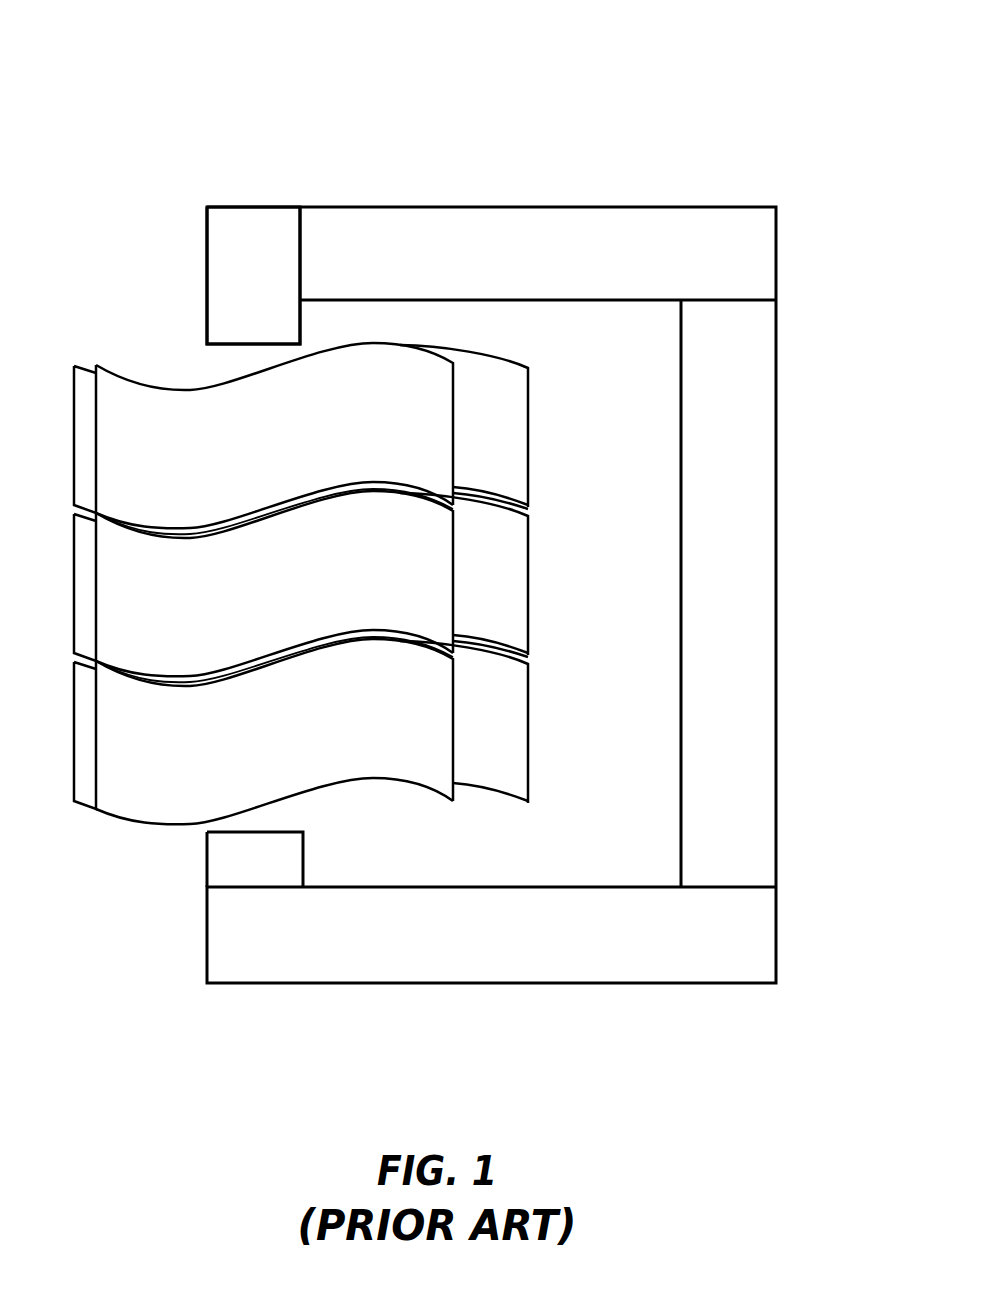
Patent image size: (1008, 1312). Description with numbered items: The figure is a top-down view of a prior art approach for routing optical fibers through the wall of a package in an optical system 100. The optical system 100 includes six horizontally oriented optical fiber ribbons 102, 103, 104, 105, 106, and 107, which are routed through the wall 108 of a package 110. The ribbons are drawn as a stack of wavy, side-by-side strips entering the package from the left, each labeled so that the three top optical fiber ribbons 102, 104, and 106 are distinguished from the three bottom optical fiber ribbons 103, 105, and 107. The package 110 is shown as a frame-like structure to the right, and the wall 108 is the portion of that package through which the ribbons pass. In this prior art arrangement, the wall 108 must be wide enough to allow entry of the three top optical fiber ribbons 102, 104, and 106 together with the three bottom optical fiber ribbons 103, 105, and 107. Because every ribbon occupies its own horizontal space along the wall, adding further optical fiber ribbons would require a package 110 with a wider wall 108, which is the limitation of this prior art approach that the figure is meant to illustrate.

The optical system 100 is at (510, 80).
The optical fiber ribbon 102 is at (263, 438).
The optical fiber ribbon 103 is at (464, 427).
The optical fiber ribbon 104 is at (263, 586).
The optical fiber ribbon 105 is at (464, 575).
The optical fiber ribbon 106 is at (263, 731).
The optical fiber ribbon 107 is at (464, 722).
The wall 108 is at (235, 344).
The package 110 is at (776, 578).